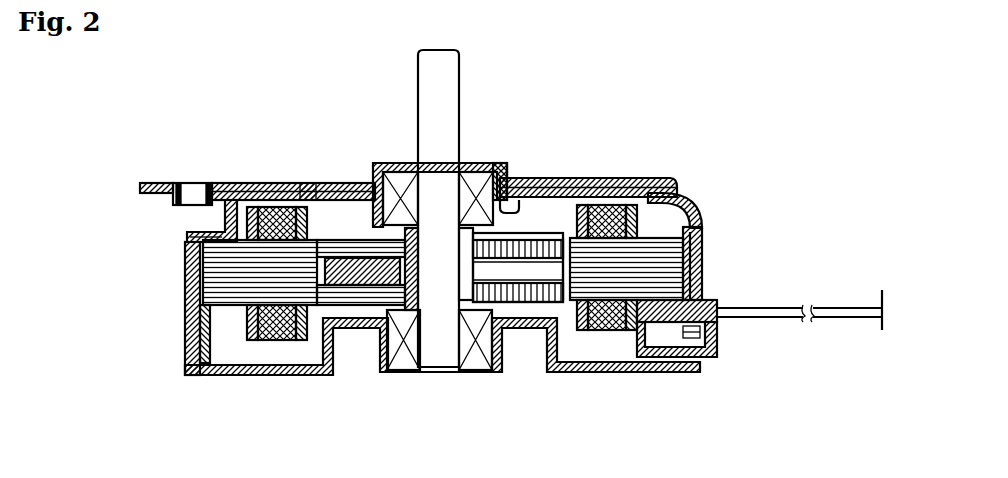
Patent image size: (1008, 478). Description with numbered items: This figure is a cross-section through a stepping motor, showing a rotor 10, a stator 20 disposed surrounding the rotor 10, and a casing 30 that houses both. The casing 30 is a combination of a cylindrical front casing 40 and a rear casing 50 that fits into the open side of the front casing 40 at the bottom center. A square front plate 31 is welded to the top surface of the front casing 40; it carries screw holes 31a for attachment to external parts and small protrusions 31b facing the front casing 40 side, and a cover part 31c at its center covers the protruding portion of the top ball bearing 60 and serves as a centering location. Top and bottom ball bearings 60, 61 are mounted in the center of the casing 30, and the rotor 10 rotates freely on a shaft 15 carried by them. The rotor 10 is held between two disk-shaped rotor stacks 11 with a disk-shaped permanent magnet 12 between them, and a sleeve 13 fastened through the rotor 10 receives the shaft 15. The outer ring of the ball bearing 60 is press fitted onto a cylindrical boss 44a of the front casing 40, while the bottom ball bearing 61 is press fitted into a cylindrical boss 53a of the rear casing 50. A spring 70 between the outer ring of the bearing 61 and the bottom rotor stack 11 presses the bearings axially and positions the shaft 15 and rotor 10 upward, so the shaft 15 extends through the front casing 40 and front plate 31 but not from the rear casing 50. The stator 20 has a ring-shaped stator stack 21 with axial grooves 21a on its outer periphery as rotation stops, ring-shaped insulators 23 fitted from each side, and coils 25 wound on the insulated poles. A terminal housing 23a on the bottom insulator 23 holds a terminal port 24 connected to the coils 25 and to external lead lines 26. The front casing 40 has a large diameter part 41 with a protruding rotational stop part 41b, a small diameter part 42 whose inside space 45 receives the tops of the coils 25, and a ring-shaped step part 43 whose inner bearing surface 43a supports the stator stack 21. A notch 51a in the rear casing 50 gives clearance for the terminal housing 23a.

The rotor 10 is at (357, 238).
The rotor stacks 11 is at (434, 279).
The permanent magnet 12 is at (360, 290).
The sleeve 13 is at (393, 176).
The shaft 15 is at (460, 70).
The stator 20 is at (386, 347).
The stator stack 21 is at (195, 316).
The grooves 21a is at (190, 292).
The insulators 23 is at (228, 312).
The terminal housing 23a is at (718, 327).
The terminal port 24 is at (658, 365).
The coil 25 is at (613, 335).
The lead lines 26 is at (827, 305).
The casing 30 is at (162, 310).
The front plate 31 is at (230, 195).
The screw holes 31a is at (193, 193).
The small protrusions 31b is at (172, 203).
The cover part 31c is at (500, 160).
The front casing 40 is at (702, 250).
The large diameter part 41 is at (187, 318).
The protruding part 41b is at (187, 241).
The small diameter part 42 is at (222, 216).
The step part 43 is at (672, 220).
The bearing surface 43a is at (690, 268).
The boss 44a is at (517, 195).
The inside space 45 is at (308, 182).
The rear casing 50 is at (258, 374).
The notch 51a is at (703, 360).
The boss 53a is at (520, 365).
The ball bearing 60 is at (478, 178).
The ball bearing 61 is at (428, 345).
The spring 70 is at (385, 300).